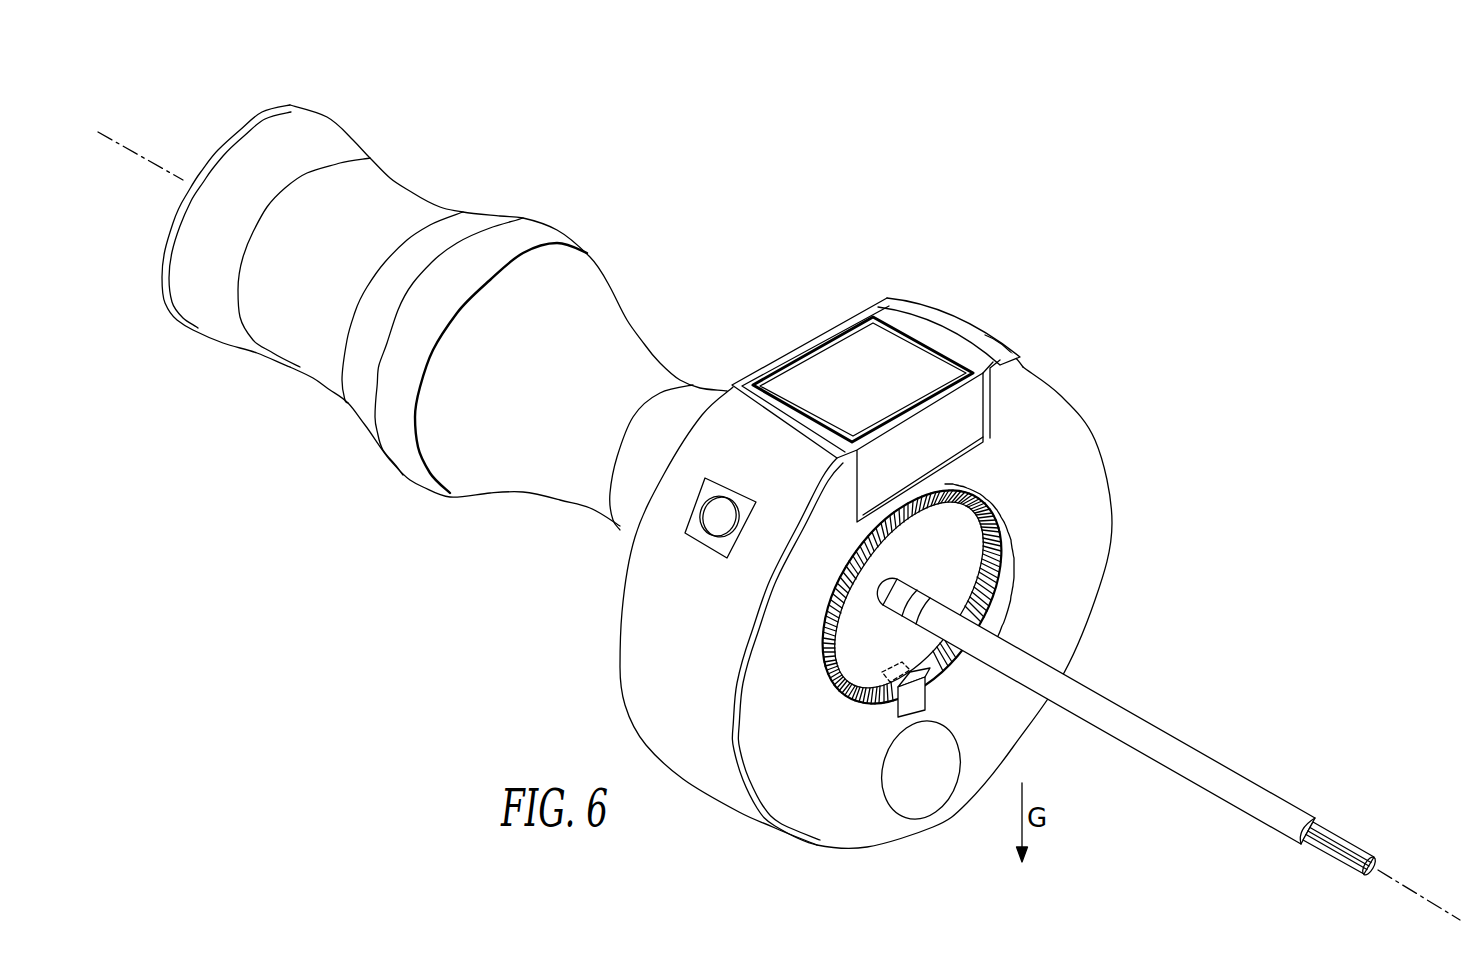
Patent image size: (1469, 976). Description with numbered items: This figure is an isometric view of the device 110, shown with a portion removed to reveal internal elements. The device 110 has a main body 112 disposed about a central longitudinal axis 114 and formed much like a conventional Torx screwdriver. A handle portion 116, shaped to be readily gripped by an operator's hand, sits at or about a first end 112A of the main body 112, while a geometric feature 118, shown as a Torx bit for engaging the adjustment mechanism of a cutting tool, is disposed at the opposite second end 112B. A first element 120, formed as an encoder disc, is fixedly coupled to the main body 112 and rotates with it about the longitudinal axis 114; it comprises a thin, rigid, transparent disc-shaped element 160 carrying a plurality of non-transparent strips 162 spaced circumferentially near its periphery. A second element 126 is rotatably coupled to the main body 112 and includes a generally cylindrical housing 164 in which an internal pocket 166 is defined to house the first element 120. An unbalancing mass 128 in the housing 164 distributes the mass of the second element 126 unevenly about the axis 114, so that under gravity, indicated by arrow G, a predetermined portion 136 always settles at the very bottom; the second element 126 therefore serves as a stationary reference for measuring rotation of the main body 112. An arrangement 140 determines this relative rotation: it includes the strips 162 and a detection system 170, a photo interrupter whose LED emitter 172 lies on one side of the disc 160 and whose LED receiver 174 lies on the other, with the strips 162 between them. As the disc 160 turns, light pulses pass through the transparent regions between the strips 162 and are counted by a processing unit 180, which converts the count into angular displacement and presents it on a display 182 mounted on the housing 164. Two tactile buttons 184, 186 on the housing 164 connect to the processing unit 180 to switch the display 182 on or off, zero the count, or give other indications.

The device 110 is at (816, 207).
The main body 112 is at (1112, 710).
The first end 112A is at (177, 146).
The second end 112B is at (1364, 813).
The central longitudinal axis 114 is at (1423, 893).
The handle portion 116 is at (568, 273).
The geometric feature 118 is at (1343, 853).
The first element 120 is at (960, 545).
The second element 126 is at (1054, 348).
The unbalancing mass 128 is at (920, 780).
The predetermined portion 136 is at (921, 849).
The arrangement 140 is at (884, 726).
The disc-shaped element 160 is at (953, 533).
The non-transparent strips 162 is at (997, 557).
The housing 164 is at (1067, 412).
The internal pocket 166 is at (995, 592).
The detection system 170 is at (923, 708).
The LED emitter 172 is at (925, 696).
The LED receiver 174 is at (890, 660).
The processing unit 180 is at (972, 405).
The display 182 is at (823, 367).
The tactile button 184 is at (718, 512).
The tactile button 186 is at (1000, 338).